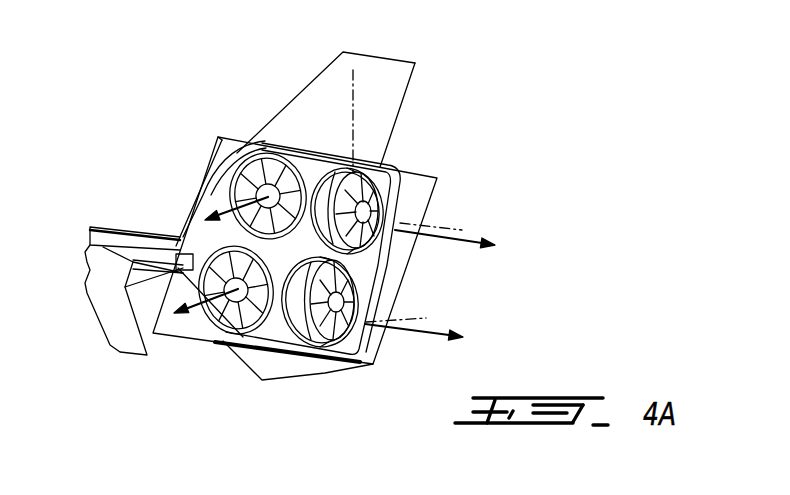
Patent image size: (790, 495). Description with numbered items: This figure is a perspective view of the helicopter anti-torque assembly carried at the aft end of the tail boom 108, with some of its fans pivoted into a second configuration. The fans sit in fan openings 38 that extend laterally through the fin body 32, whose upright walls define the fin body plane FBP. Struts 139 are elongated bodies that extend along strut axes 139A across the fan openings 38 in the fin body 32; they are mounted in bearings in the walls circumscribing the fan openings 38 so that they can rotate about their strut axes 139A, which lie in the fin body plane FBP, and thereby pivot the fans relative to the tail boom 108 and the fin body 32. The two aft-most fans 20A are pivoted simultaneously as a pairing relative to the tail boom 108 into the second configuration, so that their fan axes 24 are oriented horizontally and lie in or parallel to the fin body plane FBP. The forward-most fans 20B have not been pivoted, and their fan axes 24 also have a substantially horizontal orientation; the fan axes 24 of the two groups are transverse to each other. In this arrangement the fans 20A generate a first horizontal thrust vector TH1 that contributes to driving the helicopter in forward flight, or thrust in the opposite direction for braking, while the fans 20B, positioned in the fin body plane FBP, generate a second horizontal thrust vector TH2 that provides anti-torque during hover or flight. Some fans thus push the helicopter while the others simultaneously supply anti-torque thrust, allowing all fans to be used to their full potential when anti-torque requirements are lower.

The tail boom 108 is at (92, 226).
The second horizontal thrust vector TH2 is at (225, 203).
The fin body plane FBP is at (230, 140).
The forward-most fans 20B is at (277, 150).
The aft-most fans 20A is at (338, 168).
The strut axes 139A is at (355, 70).
The struts 139 is at (398, 192).
The fan openings 38 is at (387, 210).
The fan axis 24 is at (462, 229).
The first horizontal thrust vector TH1 is at (455, 247).
The fin body 32 is at (380, 265).